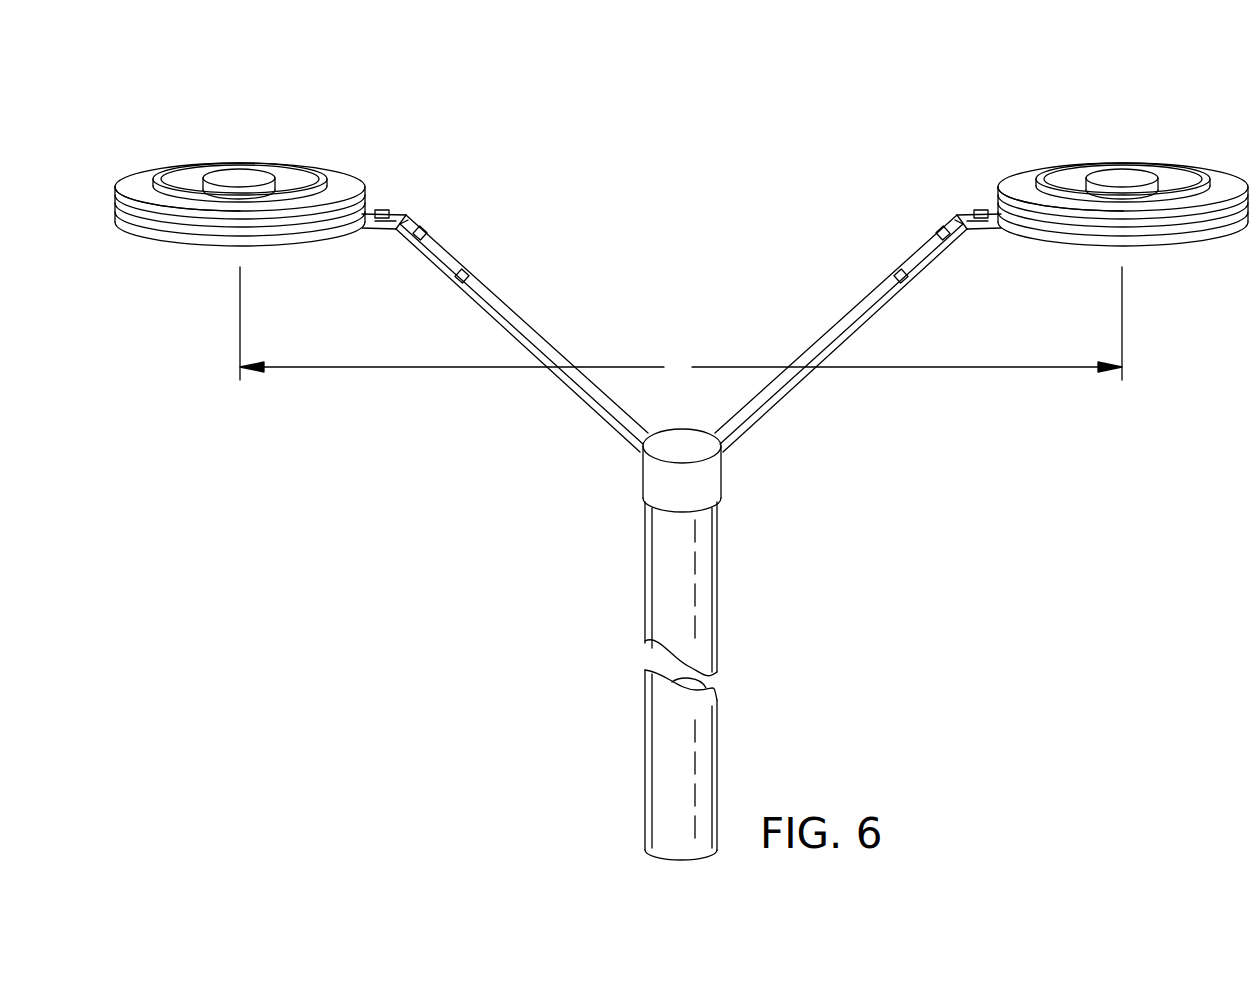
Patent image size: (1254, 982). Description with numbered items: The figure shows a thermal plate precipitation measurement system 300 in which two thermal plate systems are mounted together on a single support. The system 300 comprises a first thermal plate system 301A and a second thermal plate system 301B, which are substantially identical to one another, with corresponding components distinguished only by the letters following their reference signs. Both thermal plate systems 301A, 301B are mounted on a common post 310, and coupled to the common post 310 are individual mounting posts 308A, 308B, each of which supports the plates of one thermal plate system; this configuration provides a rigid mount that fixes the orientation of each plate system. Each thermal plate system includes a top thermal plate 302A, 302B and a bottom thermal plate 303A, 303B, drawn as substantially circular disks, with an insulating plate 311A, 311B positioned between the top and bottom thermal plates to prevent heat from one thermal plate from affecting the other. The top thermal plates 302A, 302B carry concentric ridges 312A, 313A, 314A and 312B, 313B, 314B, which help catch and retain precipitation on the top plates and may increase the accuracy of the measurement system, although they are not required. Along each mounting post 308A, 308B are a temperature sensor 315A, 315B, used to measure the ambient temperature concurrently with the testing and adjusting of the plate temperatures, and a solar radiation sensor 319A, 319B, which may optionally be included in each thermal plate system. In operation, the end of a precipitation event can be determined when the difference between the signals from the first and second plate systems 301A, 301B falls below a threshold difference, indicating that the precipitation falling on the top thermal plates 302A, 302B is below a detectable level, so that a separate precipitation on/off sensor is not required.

The thermal plate precipitation measurement system 300 is at (636, 110).
The first thermal plate system 301A is at (211, 110).
The second thermal plate system 301B is at (1126, 166).
The top thermal plate 302A is at (341, 186).
The top thermal plate 302B is at (1126, 167).
The bottom thermal plate 303A is at (267, 246).
The bottom thermal plate 303B is at (1123, 255).
The mounting post 308A is at (542, 339).
The mounting post 308B is at (766, 397).
The common post 310 is at (706, 619).
The insulating plate 311A is at (191, 230).
The insulating plate 311B is at (1123, 234).
The concentric ridge 312A is at (254, 172).
The concentric ridge 312B is at (1127, 160).
The concentric ridge 313A is at (185, 165).
The concentric ridge 313B is at (1123, 160).
The concentric ridge 314A is at (145, 170).
The concentric ridge 314B is at (1060, 167).
The temperature sensor 315A is at (460, 283).
The temperature sensor 315B is at (902, 284).
The solar radiation sensor 319A is at (417, 240).
The solar radiation sensor 319B is at (946, 240).